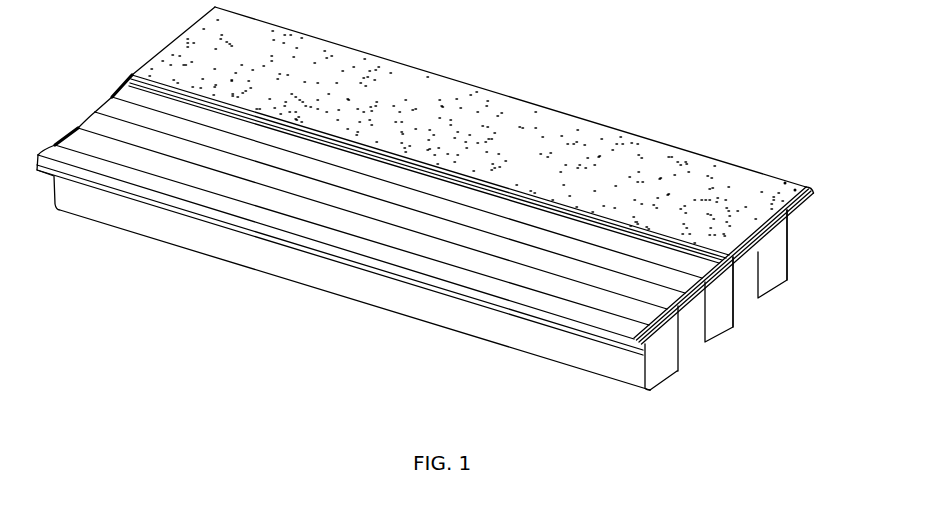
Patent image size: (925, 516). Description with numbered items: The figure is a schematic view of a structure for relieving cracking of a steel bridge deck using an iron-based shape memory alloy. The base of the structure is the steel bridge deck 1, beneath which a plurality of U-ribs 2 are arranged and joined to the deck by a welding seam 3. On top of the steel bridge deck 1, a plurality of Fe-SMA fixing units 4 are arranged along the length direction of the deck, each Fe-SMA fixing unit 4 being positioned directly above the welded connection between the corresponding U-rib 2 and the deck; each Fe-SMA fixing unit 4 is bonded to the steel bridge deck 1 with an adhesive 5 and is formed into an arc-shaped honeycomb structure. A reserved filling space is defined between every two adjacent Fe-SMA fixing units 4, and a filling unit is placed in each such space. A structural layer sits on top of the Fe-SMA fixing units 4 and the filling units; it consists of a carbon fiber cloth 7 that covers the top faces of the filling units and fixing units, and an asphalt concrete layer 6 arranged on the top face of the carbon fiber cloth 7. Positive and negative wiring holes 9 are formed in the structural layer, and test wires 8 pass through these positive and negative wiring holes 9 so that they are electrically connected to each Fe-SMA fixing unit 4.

The steel bridge deck 1 is at (563, 342).
The U-rib 2 is at (674, 371).
The welding seam 3 is at (761, 268).
The Fe-SMA fixing unit 4 is at (352, 258).
The adhesive 5 is at (698, 314).
The asphalt concrete layer 6 is at (705, 173).
The carbon fiber cloth 7 is at (715, 268).
The test wire 8 is at (674, 336).
The positive and negative wiring hole 9 is at (813, 179).